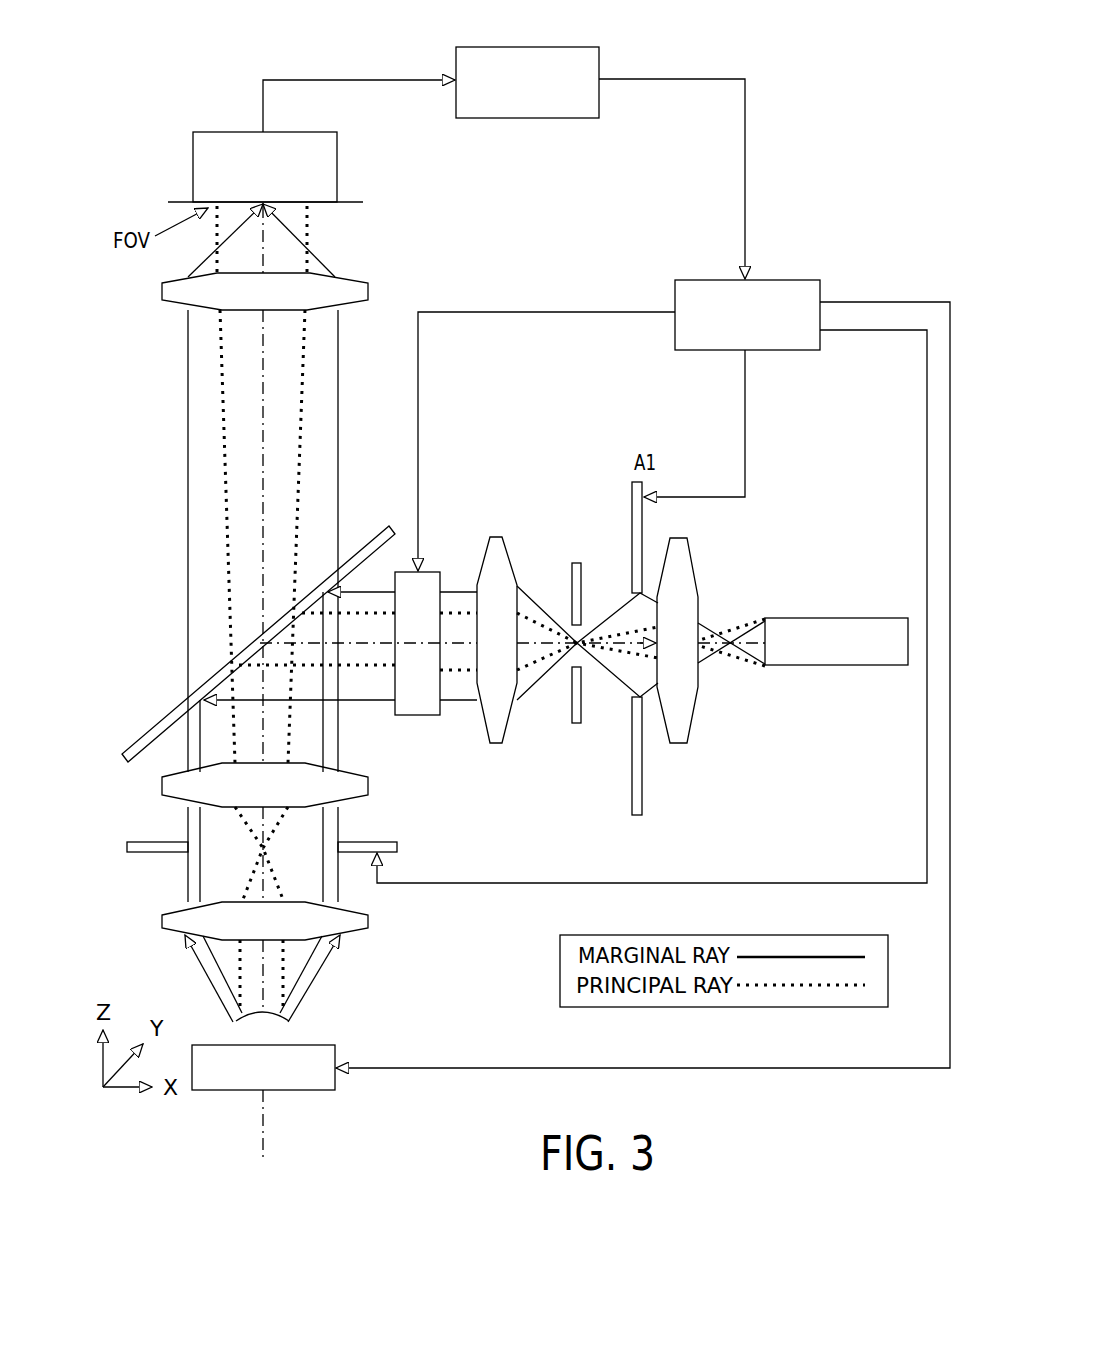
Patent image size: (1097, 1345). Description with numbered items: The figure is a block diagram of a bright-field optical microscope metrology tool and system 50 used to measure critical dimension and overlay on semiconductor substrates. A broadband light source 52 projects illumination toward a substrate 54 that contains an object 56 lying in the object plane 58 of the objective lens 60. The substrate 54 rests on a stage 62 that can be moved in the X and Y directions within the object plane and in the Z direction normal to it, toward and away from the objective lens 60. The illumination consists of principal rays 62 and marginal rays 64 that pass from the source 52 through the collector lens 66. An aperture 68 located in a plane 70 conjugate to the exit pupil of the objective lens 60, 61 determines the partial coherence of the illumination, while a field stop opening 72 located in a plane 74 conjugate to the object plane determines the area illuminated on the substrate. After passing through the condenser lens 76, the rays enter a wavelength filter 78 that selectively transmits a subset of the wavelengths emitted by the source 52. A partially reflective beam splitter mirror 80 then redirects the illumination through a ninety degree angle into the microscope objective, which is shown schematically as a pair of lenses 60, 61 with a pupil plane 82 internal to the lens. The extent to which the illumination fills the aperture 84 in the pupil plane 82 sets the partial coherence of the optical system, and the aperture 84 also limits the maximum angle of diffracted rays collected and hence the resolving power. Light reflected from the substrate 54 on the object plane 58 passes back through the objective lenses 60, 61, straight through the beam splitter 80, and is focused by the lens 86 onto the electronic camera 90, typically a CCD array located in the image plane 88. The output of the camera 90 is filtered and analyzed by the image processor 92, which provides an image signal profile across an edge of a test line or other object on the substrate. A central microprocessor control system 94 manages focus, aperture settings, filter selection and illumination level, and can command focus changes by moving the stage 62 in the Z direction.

The optical metrology tool and system 50 is at (802, 113).
The broadband light source 52 is at (818, 618).
The substrate 54 is at (204, 978).
The object 56 is at (322, 978).
The object plane 58 is at (330, 1044).
The objective lens 60 is at (368, 935).
The objective lens 61 is at (370, 786).
The principal rays 62 is at (732, 660).
The marginal rays 64 is at (708, 622).
The collector lens 66 is at (693, 720).
The aperture 68 is at (627, 603).
The conjugate plane 70 is at (632, 797).
The field stop opening 72 is at (566, 622).
The conjugate plane 74 is at (573, 716).
The condenser lens 76 is at (477, 732).
The wavelength filter 78 is at (396, 712).
The partially reflective beam splitter mirror 80 is at (172, 708).
The pupil plane 82 is at (148, 842).
The aperture 84 is at (325, 846).
The lens 86 is at (368, 292).
The image plane 88 is at (345, 203).
The electronic camera 90 is at (337, 172).
The image processor 92 is at (525, 47).
The central microprocessor control system 94 is at (785, 280).